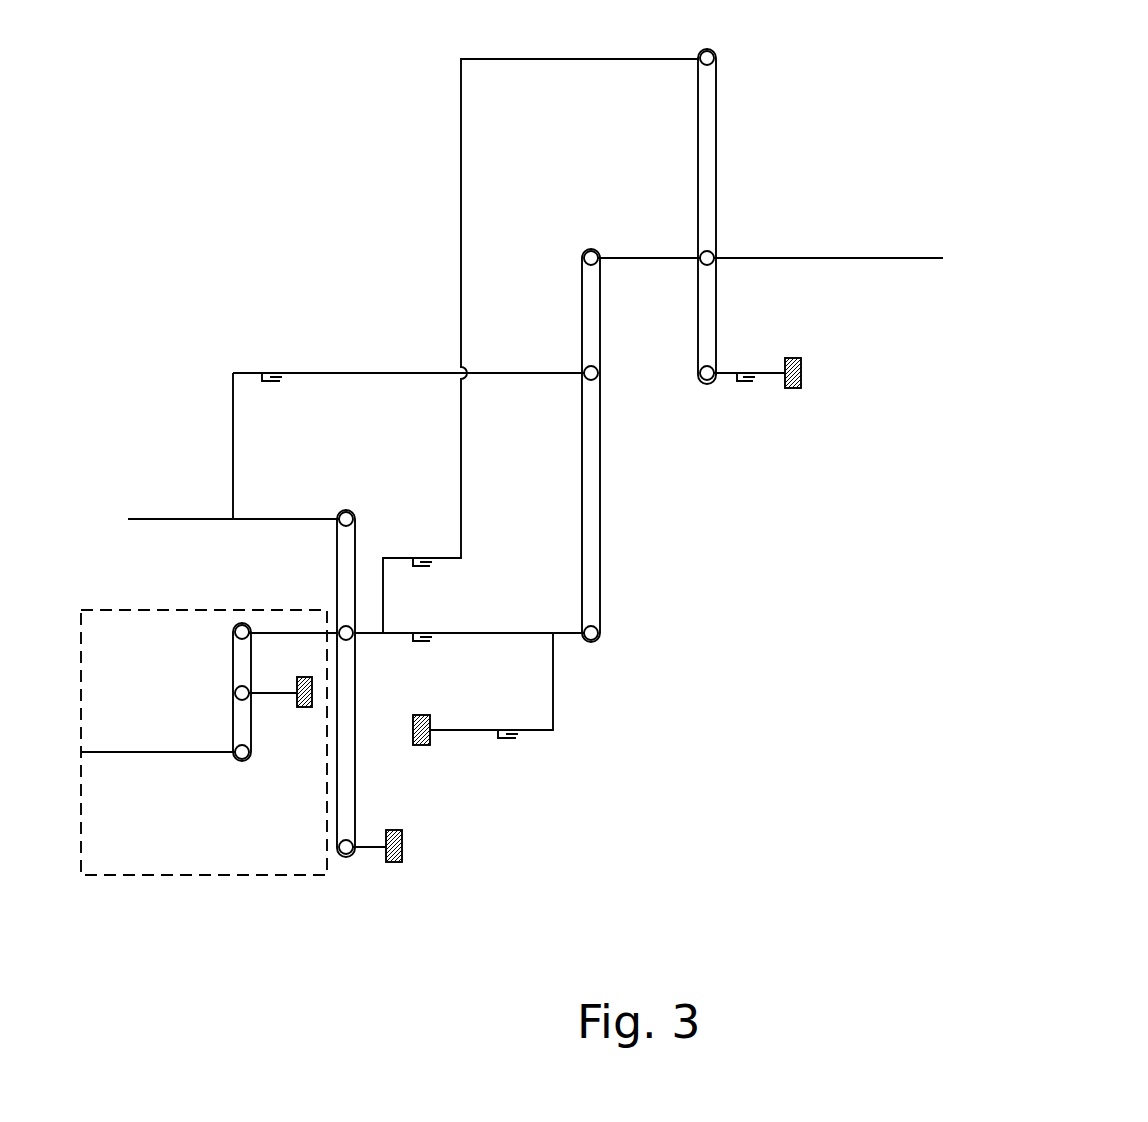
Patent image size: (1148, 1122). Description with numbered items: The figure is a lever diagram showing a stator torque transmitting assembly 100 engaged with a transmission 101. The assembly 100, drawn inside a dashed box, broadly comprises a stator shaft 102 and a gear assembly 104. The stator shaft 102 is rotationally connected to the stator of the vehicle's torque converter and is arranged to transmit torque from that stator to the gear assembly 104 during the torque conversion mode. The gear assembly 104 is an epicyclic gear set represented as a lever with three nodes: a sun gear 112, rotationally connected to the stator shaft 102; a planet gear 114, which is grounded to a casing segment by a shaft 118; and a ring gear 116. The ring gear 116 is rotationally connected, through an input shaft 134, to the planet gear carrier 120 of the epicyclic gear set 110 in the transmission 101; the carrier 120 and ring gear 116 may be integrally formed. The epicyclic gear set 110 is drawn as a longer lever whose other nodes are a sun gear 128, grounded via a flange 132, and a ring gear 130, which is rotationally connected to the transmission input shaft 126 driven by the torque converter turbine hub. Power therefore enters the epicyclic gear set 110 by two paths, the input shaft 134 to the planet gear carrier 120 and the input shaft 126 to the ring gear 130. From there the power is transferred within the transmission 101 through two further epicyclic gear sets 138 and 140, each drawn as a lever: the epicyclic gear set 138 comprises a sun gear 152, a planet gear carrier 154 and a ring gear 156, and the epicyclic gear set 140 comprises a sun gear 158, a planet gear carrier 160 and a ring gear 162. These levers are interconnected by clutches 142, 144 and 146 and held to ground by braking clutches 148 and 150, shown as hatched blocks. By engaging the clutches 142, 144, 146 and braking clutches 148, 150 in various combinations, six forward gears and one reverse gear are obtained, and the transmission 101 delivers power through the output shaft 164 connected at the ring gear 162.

The stator torque transmitting assembly 100 is at (80, 606).
The transmission 101 is at (306, 131).
The stator shaft 102 is at (130, 752).
The gear assembly 104 is at (226, 781).
The epicyclic gear set 110 is at (339, 878).
The sun gear 112 is at (247, 759).
The planet gear 114 is at (235, 693).
The ring gear 116 is at (234, 630).
The shaft 118 is at (304, 709).
The planet gear carrier 120 is at (336, 631).
The transmission input shaft 126 is at (163, 517).
The sun gear 128 is at (350, 858).
The ring gear 130 is at (349, 511).
The flange 132 is at (404, 845).
The input shaft 134 is at (270, 628).
The epicyclic gear set 138 is at (613, 659).
The epicyclic gear set 140 is at (723, 396).
The clutch 142 is at (421, 555).
The clutch 144 is at (433, 630).
The clutch 146 is at (272, 370).
The braking clutch 148 is at (510, 740).
The braking clutch 150 is at (752, 382).
The sun gear 152 is at (600, 634).
The planet gear carrier 154 is at (598, 382).
The ring gear 156 is at (591, 250).
The sun gear 158 is at (715, 52).
The planet gear carrier 160 is at (706, 382).
The ring gear 162 is at (713, 255).
The output shaft 164 is at (862, 257).